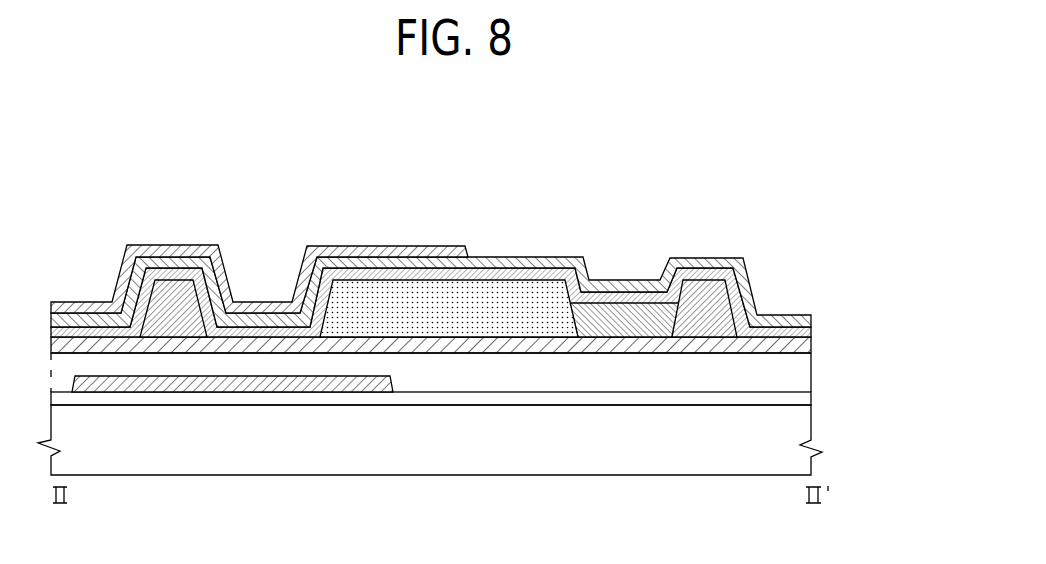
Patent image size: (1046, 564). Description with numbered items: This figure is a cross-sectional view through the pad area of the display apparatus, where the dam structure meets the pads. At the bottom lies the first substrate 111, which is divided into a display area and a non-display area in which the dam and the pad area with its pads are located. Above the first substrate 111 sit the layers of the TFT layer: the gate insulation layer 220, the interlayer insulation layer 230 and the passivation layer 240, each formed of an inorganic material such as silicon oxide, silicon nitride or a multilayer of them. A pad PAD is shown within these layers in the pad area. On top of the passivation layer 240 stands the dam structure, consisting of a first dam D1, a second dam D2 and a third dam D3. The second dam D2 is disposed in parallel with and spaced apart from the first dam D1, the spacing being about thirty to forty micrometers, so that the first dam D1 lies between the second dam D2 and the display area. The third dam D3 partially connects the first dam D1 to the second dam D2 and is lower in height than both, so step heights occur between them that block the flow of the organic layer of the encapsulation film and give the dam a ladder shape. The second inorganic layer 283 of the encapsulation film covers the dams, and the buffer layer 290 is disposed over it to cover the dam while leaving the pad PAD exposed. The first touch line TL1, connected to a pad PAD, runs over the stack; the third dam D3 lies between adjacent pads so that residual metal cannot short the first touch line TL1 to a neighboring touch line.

The passivation layer 240 is at (793, 343).
The second inorganic layer 283 is at (797, 333).
The buffer layer 290 is at (545, 263).
The first touch line TL1 is at (378, 250).
The third dam D3 is at (617, 320).
The second dam D2 is at (485, 300).
The first dam D1 is at (173, 300).
The interlayer insulation layer 230 is at (802, 375).
The gate insulation layer 220 is at (793, 400).
The first substrate 111 is at (802, 427).
The pad PAD is at (218, 383).